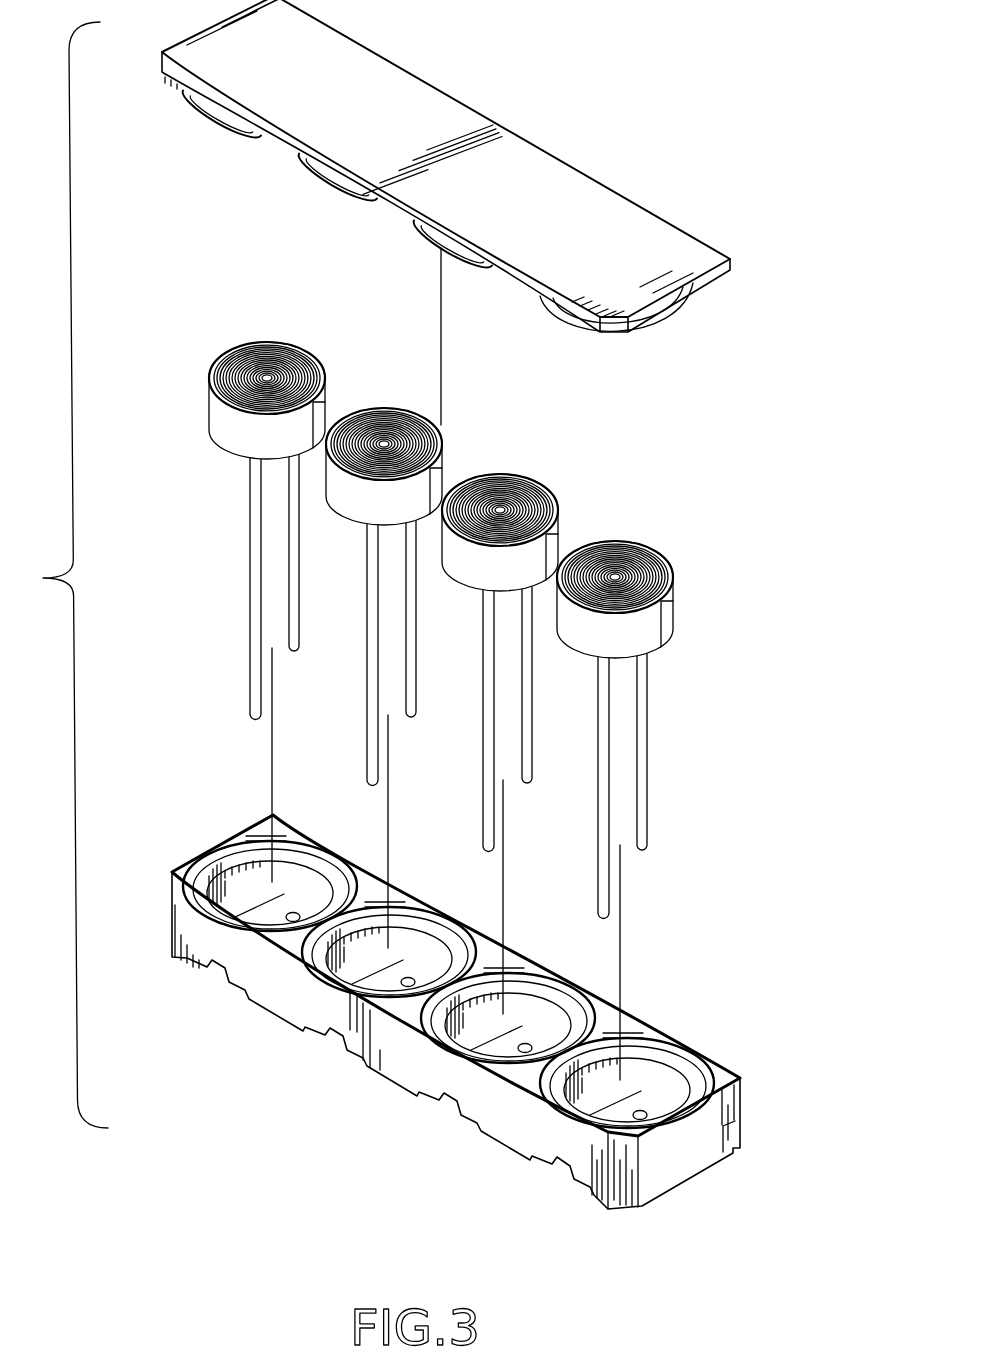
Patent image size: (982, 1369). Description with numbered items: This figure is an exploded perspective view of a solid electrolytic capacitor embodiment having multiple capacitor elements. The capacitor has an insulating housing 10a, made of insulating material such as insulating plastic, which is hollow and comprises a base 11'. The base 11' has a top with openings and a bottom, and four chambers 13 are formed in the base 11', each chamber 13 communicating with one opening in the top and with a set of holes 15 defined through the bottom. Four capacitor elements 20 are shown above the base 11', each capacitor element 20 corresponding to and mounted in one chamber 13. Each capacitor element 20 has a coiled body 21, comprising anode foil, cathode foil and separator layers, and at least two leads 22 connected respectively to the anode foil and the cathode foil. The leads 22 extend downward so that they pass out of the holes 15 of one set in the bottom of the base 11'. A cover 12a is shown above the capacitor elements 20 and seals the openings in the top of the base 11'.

The insulating housing 10a is at (513, 1003).
The base 11' is at (777, 1135).
The cover 12a is at (620, 212).
The chamber 13 is at (235, 876).
The holes 15 is at (293, 913).
The capacitor element 20 is at (432, 611).
The body 21 is at (668, 612).
The leads 22 is at (640, 742).